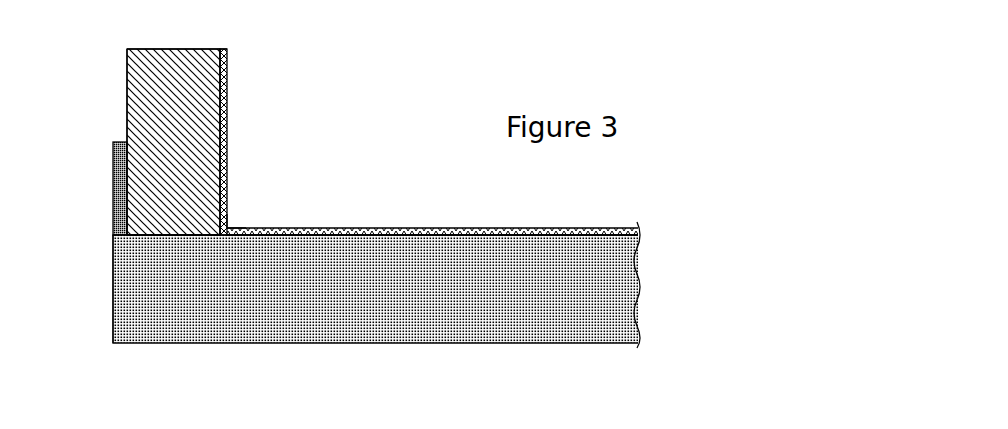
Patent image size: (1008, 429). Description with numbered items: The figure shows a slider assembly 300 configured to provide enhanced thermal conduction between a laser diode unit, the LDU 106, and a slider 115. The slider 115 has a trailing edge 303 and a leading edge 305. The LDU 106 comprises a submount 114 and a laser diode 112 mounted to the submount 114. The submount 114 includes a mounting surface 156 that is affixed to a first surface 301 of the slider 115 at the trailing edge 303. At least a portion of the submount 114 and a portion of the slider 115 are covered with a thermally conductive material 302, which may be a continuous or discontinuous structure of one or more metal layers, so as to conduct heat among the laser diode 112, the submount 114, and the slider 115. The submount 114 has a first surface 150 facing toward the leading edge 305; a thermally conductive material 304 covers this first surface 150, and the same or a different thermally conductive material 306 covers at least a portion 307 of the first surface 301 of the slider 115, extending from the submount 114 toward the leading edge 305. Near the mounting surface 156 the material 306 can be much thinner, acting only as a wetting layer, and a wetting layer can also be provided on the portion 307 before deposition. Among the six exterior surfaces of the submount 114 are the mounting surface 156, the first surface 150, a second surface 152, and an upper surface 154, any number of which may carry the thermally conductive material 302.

The slider assembly 300 is at (424, 84).
The laser diode unit 106 is at (103, 41).
The submount 114 is at (173, 142).
The first surface of submount 150 is at (221, 116).
The thermally conductive material 304 is at (227, 80).
The second surface of submount 152 is at (127, 82).
The upper surface of submount 154 is at (173, 49).
The mounting surface 156 is at (148, 236).
The first surface of slider 301 is at (197, 236).
The laser diode 112 is at (113, 170).
The thermally conductive material 302 is at (246, 227).
The thermally conductive material 306 is at (432, 228).
The portion of first surface of slider 307 is at (352, 236).
The slider 115 is at (375, 289).
The trailing edge 303 is at (113, 302).
The leading edge 305 is at (654, 272).